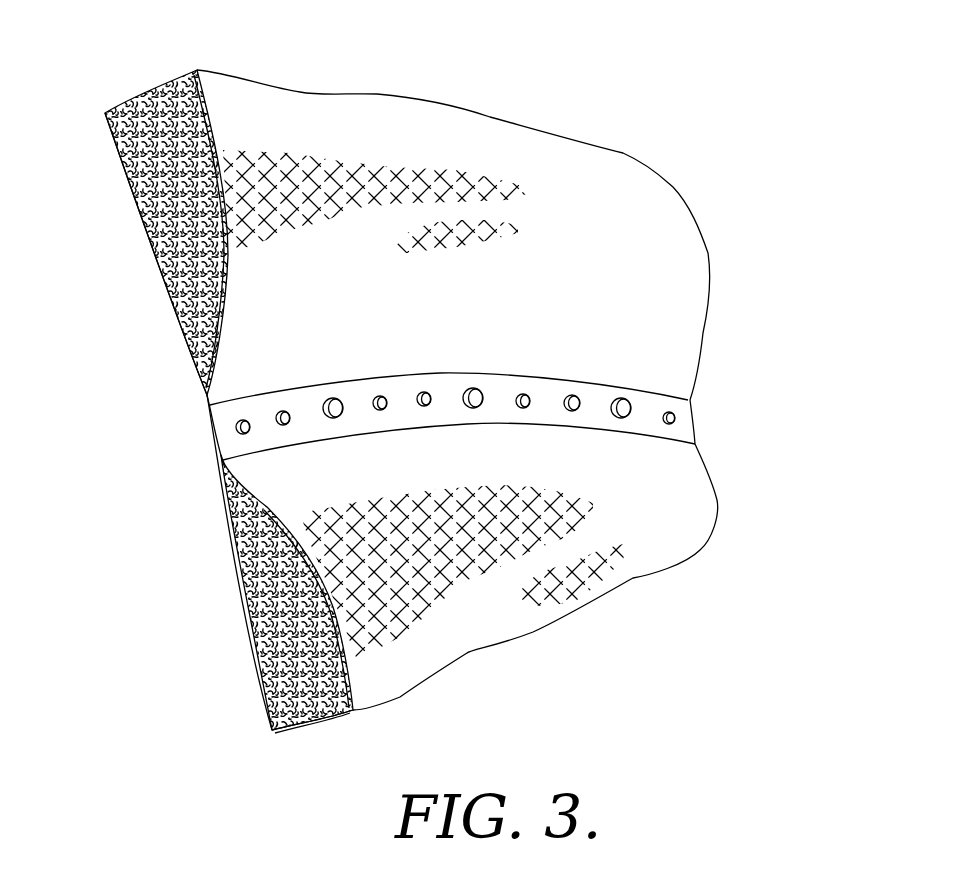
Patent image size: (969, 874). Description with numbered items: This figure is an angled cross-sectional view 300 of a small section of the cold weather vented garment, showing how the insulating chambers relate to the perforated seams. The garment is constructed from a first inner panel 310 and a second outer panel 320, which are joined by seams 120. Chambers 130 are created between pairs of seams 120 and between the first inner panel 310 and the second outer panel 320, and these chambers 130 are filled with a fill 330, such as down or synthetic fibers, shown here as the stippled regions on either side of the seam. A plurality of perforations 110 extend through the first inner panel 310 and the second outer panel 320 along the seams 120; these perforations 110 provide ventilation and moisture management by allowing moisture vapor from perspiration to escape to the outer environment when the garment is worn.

The angled cross-sectional view 300 is at (509, 106).
The perforations 110 is at (623, 400).
The seams 120 is at (685, 429).
The chambers 130 is at (179, 395).
The first inner panel 310 is at (240, 557).
The second outer panel 320 is at (353, 697).
The fill 330 is at (302, 700).